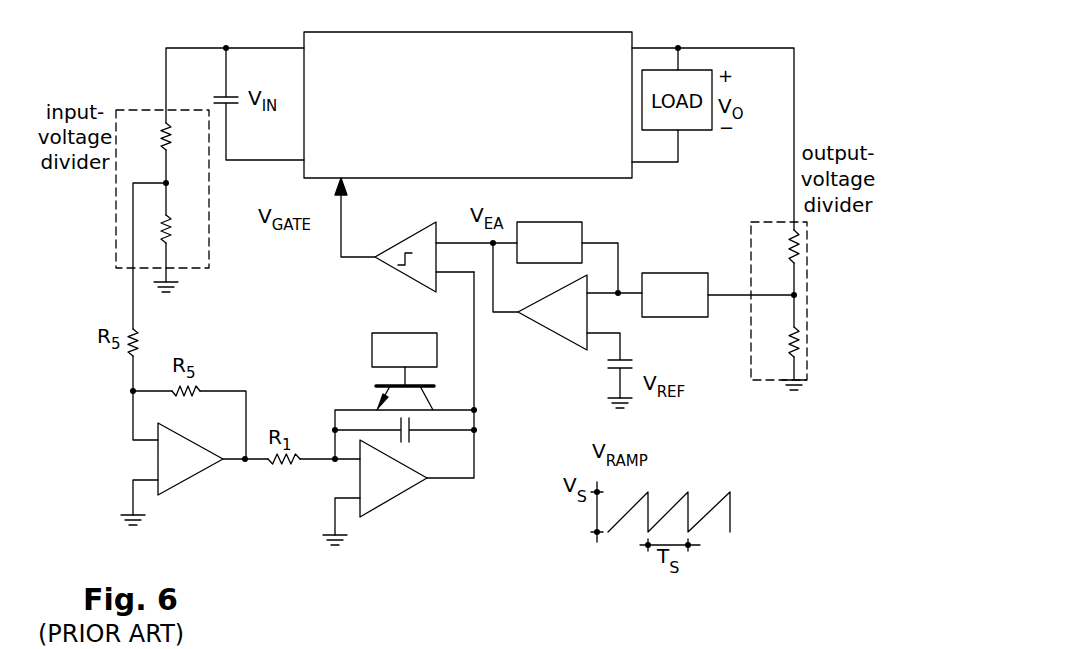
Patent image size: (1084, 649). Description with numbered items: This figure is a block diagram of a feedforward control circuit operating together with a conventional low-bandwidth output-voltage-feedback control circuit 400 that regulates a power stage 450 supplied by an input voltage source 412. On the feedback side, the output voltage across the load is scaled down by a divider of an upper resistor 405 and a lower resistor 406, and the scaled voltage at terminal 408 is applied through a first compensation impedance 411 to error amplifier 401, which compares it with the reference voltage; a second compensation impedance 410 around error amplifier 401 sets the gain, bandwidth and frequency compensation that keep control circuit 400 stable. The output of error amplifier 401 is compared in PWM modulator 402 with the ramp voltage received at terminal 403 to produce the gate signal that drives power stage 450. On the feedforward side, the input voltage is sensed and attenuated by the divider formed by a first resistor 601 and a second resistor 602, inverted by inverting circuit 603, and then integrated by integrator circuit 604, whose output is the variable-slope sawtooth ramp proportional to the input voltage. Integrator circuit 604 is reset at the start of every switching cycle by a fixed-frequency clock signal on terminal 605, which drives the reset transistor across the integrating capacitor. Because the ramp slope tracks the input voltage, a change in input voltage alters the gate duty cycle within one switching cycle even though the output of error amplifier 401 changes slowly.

The output-voltage-feedback control circuit 400 is at (772, 432).
The error amplifier 401 is at (556, 293).
The PWM modulator 402 is at (405, 245).
The ramp voltage terminal 403 is at (466, 274).
The resistor R3 405 is at (800, 247).
The resistor R4 406 is at (800, 342).
The scaled output voltage terminal 408 is at (757, 297).
The compensation impedance Z2 410 is at (583, 227).
The compensation impedance Z1 411 is at (683, 270).
The input voltage source 412 is at (215, 97).
The power stage 450 is at (607, 77).
The resistor R1 601 is at (163, 125).
The resistor R2 602 is at (168, 245).
The inverting circuit 603 is at (245, 520).
The integrator circuit 604 is at (462, 535).
The clock terminal 605 is at (384, 386).